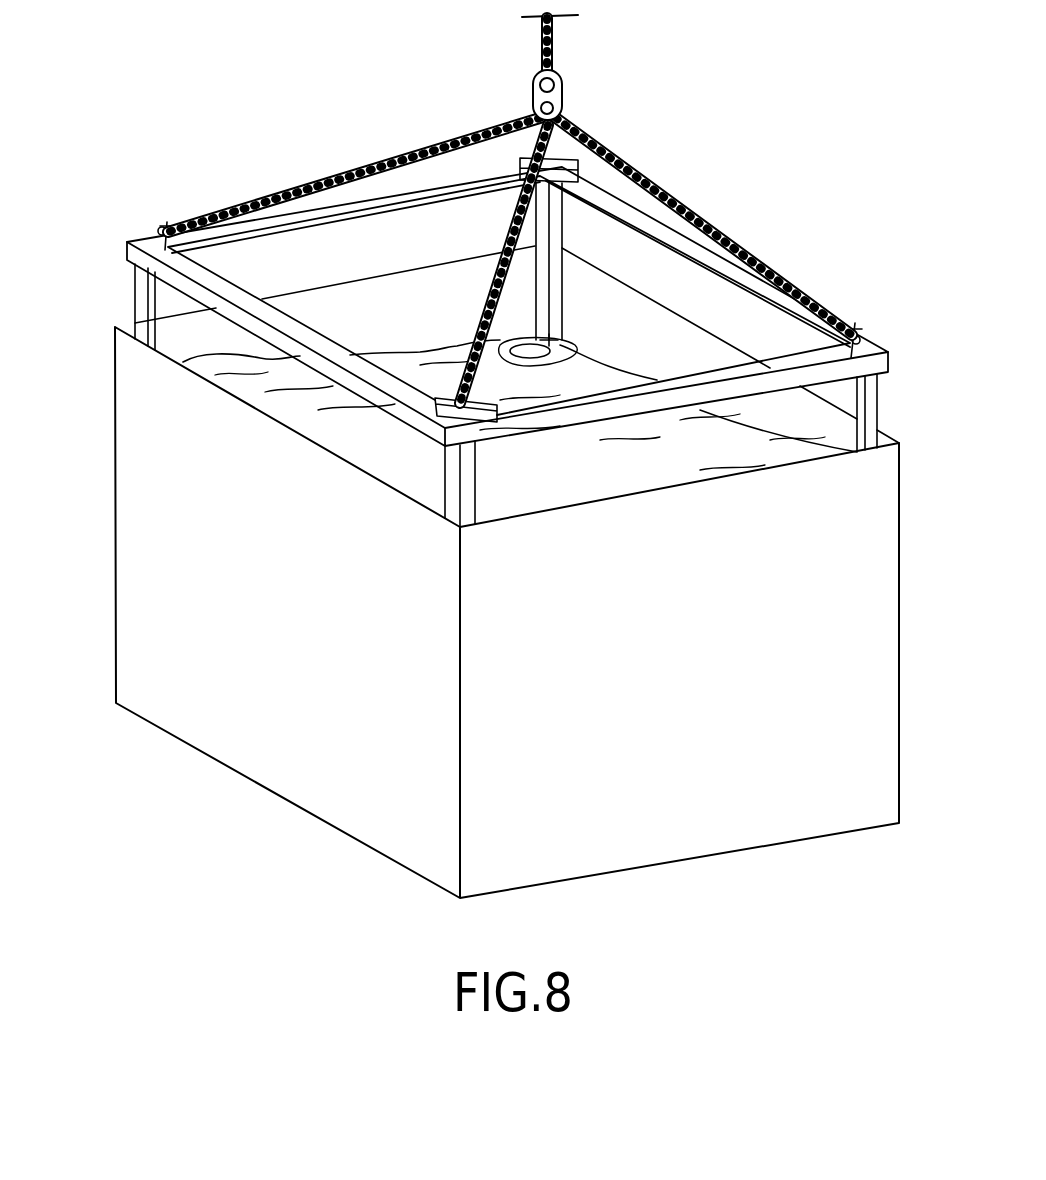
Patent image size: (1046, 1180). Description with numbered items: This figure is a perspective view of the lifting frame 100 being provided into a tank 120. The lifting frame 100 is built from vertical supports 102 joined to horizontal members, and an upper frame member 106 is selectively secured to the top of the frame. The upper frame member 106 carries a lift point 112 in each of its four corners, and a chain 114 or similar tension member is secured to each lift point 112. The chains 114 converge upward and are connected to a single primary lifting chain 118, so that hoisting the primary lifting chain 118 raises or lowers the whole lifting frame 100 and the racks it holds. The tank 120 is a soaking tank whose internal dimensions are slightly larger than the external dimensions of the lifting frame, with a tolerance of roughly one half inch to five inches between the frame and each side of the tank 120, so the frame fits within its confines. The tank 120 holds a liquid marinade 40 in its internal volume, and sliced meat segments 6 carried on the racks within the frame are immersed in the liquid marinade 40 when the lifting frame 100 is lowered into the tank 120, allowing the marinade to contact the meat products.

The lifting frame 100 is at (498, 342).
The vertical support 102 is at (140, 290).
The upper frame member 106 is at (330, 228).
The lift point 112 is at (163, 227).
The chain 114 is at (393, 157).
The primary lifting chain 118 is at (556, 42).
The sliced meat segments 6 is at (552, 343).
The liquid marinade 40 is at (778, 453).
The tank 120 is at (870, 598).